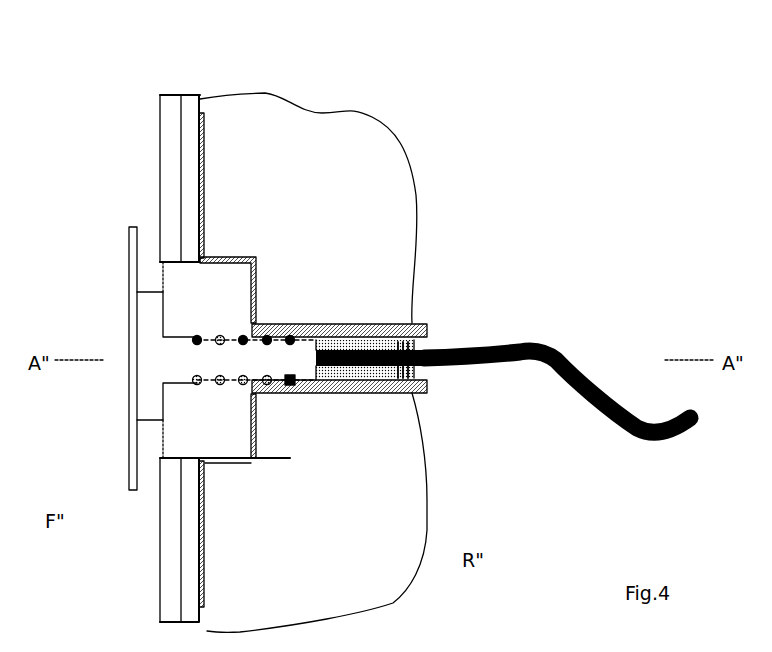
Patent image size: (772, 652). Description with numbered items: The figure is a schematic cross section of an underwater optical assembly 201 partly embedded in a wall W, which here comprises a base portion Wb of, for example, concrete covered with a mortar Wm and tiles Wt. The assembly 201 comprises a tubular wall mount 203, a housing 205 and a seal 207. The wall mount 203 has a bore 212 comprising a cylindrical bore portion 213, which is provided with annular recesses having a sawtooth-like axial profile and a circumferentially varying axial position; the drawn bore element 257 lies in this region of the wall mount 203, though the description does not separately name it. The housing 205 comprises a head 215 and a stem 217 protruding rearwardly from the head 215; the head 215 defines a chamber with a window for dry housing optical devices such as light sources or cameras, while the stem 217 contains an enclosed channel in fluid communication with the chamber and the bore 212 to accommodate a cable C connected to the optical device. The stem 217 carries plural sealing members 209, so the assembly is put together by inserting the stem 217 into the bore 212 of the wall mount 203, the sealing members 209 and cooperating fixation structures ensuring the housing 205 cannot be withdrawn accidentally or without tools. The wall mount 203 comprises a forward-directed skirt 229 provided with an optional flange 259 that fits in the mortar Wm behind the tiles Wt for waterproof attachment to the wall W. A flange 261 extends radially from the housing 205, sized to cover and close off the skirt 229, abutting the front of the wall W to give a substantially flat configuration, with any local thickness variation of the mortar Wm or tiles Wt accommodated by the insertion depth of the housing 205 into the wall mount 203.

The underwater optical assembly 201 is at (118, 430).
The tubular wall mount 203 is at (415, 318).
The housing 205 is at (128, 310).
The seal 207 is at (285, 323).
The sealing members 209 is at (197, 338).
The bore 212 is at (415, 378).
The cylindrical bore portion 213 is at (375, 395).
The head 215 is at (148, 407).
The stem 217 is at (253, 371).
The skirt 229 is at (228, 255).
The cable core 257 is at (427, 342).
The flange 259 is at (205, 185).
The flange 261 is at (137, 290).
The tiles Wt is at (165, 105).
The mortar Wm is at (185, 100).
The wall W is at (275, 90).
The base portion Wb is at (392, 163).
The cable C is at (608, 413).